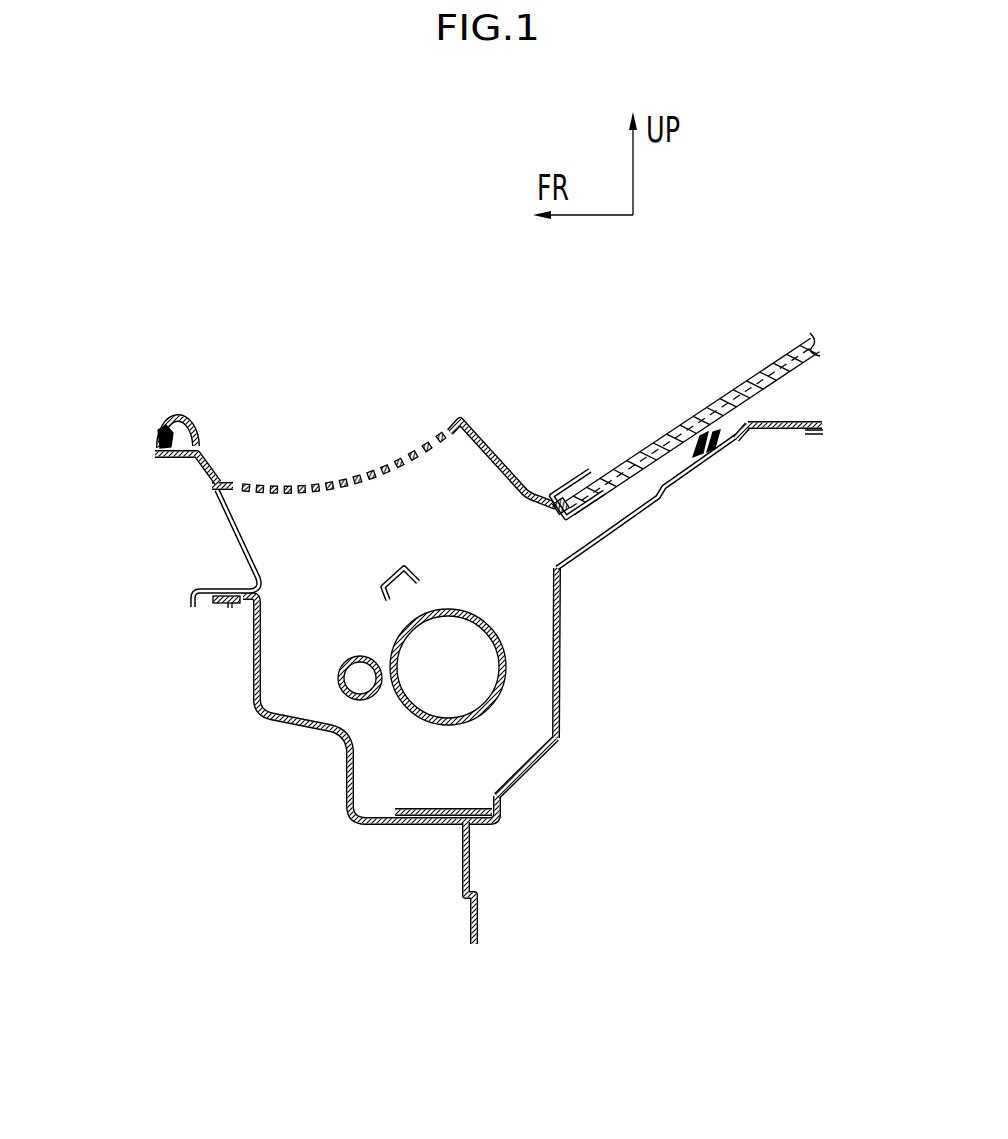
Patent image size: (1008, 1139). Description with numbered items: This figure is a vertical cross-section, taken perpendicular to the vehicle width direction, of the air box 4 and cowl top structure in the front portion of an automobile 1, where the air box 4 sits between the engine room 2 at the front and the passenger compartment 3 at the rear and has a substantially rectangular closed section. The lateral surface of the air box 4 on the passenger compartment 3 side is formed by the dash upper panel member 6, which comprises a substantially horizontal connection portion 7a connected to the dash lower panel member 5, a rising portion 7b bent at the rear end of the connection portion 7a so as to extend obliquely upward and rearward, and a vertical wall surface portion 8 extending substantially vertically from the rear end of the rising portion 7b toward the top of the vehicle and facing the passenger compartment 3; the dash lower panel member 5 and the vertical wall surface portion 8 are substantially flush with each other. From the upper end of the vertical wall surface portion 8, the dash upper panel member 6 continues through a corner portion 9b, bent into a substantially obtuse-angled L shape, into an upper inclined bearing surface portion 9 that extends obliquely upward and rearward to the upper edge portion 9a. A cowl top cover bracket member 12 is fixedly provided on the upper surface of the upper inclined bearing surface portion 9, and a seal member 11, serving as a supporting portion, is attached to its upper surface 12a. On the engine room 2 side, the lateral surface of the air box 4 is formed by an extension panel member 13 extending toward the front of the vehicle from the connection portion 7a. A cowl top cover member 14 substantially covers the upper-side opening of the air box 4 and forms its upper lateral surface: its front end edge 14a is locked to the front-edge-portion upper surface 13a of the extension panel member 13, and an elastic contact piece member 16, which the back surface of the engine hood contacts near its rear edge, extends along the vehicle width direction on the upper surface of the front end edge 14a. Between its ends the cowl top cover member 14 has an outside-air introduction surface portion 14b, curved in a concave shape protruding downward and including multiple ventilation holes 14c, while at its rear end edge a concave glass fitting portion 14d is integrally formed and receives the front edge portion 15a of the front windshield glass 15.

The automobile 1 is at (125, 455).
The engine room 2 is at (122, 786).
The passenger compartment 3 is at (782, 684).
The air box 4 is at (372, 574).
The dash lower panel member 5 is at (478, 908).
The dash upper panel member 6 is at (575, 688).
The connection portion 7a is at (445, 812).
The rising portion 7b is at (536, 762).
The vertical wall surface portion 8 is at (564, 640).
The upper inclined bearing surface portion 9 is at (700, 472).
The upper edge portion 9a is at (818, 432).
The corner portion 9b is at (566, 571).
The seal member 11 is at (702, 440).
The cowl top cover bracket member 12 is at (762, 413).
The upper surface 12a is at (757, 447).
The extension panel member 13 is at (212, 631).
The front-edge-portion upper surface 13a is at (214, 488).
The cowl top cover member 14 is at (482, 403).
The front end edge 14a is at (164, 432).
The outside-air introduction surface portion 14b is at (447, 346).
The ventilation holes 14c is at (331, 416).
The glass fitting portion 14d is at (602, 470).
The front windshield glass 15 is at (666, 404).
The front edge portion 15a is at (553, 508).
The elastic contact piece member 16 is at (190, 440).